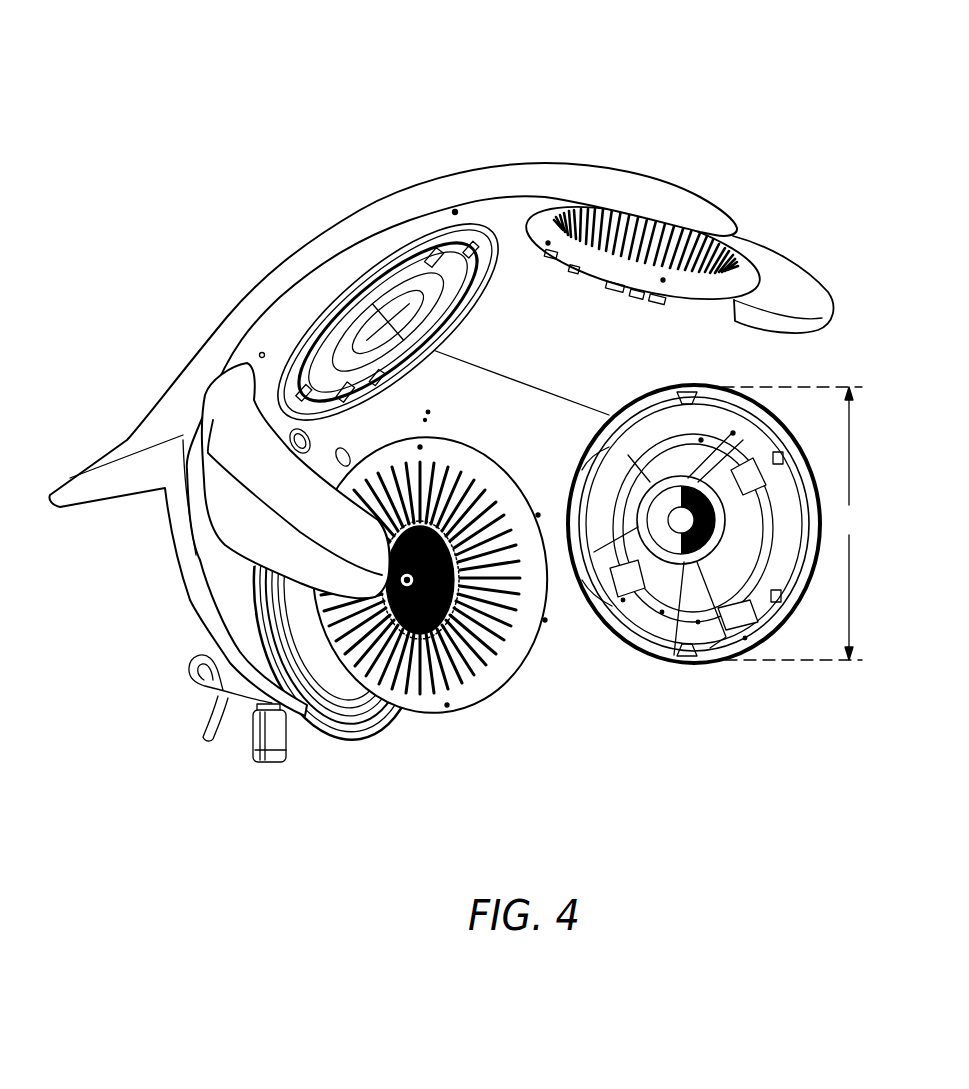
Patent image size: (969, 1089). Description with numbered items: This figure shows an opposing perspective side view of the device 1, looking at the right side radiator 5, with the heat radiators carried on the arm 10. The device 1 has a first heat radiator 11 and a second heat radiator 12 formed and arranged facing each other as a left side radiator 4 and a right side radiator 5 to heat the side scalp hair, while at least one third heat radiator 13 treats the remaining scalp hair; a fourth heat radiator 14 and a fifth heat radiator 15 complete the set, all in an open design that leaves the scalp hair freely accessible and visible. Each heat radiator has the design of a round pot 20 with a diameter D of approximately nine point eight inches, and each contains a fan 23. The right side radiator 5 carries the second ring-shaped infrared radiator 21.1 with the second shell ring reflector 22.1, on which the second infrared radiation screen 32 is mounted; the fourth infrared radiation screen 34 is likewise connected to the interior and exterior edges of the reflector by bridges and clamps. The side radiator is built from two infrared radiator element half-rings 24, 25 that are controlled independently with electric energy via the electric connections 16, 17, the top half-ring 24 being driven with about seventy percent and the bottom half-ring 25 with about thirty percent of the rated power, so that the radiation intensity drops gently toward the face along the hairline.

The device 1 is at (455, 427).
The left side radiator 4 is at (439, 601).
The right side radiator 5 is at (706, 558).
The arm 10 is at (531, 400).
The first heat radiator 11 is at (515, 708).
The second heat radiator 12 is at (706, 558).
The third heat radiator 13 is at (500, 318).
The fourth heat radiator 14 is at (633, 320).
The fifth heat radiator 15 is at (348, 765).
The electric connection 16 is at (748, 468).
The electric connection 17 is at (623, 600).
The pot 20 is at (455, 500).
The second ring-shaped infrared radiator 21.1 is at (662, 612).
The second shell ring reflector 22.1 is at (745, 638).
The fan 23 is at (624, 584).
The first infrared radiator element half-ring 24 is at (701, 438).
The second infrared radiator element half-ring 25 is at (750, 624).
The second infrared radiation screen 32 is at (733, 432).
The fourth infrared radiation screen 34 is at (698, 622).
The diameter D is at (792, 523).